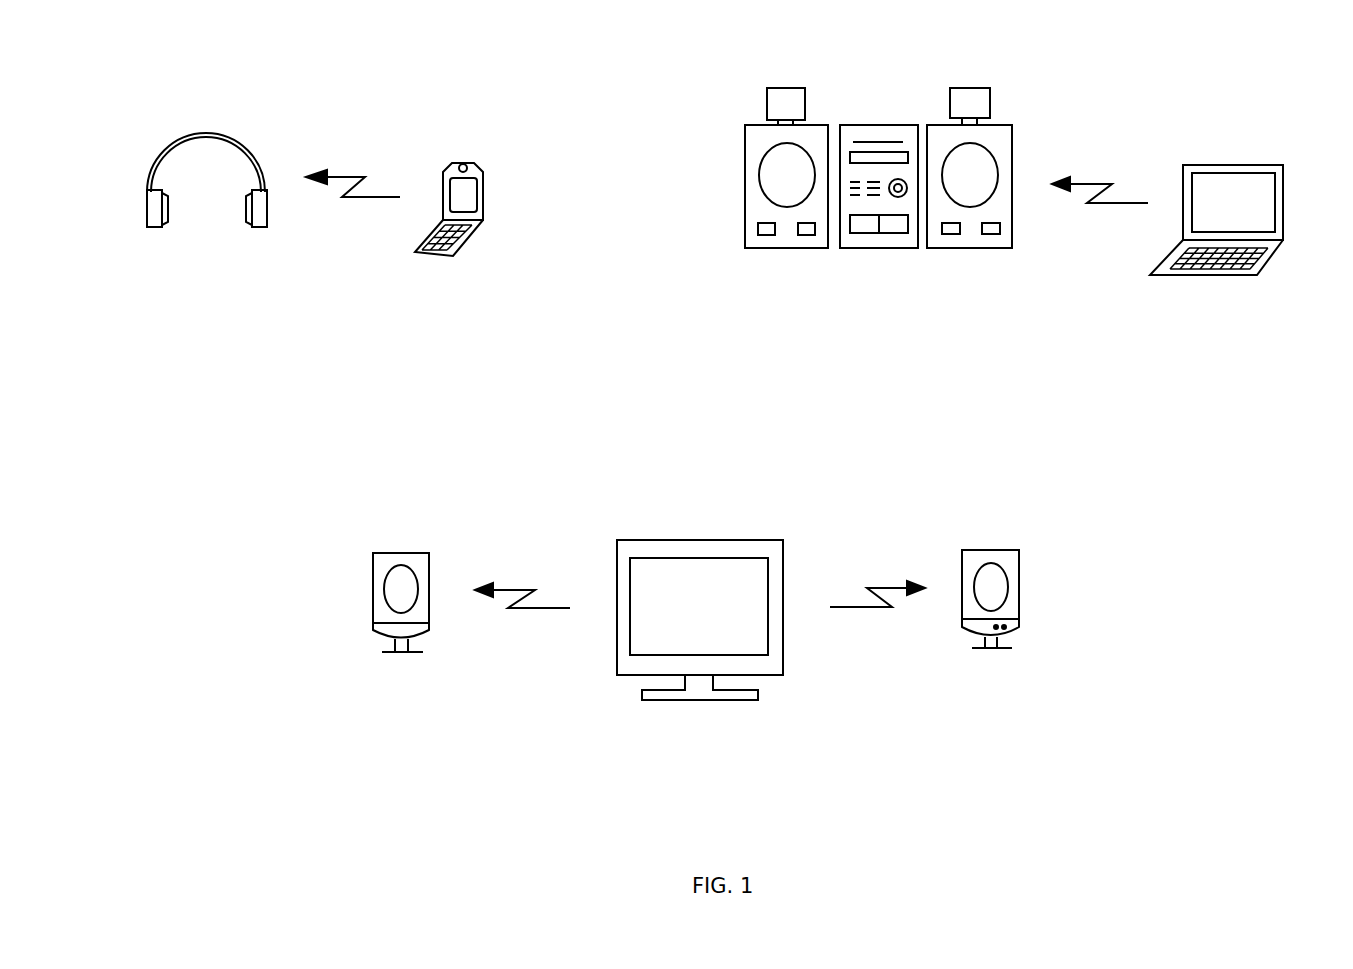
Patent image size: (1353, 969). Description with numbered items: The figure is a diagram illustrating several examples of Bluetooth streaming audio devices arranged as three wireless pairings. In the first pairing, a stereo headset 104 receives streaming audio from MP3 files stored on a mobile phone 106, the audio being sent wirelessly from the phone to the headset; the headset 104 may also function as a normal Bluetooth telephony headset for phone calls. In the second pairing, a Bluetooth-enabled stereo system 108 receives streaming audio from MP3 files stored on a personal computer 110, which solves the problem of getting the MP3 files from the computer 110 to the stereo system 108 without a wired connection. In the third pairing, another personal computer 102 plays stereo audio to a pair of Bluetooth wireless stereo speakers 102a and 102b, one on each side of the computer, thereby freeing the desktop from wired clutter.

The personal computer 102 is at (700, 540).
The stereo speaker 102a is at (373, 590).
The stereo speaker 102b is at (1019, 585).
The stereo headset 104 is at (147, 207).
The mobile phone 106 is at (485, 193).
The Bluetooth-enabled stereo system 108 is at (975, 88).
The personal computer 110 is at (1283, 200).